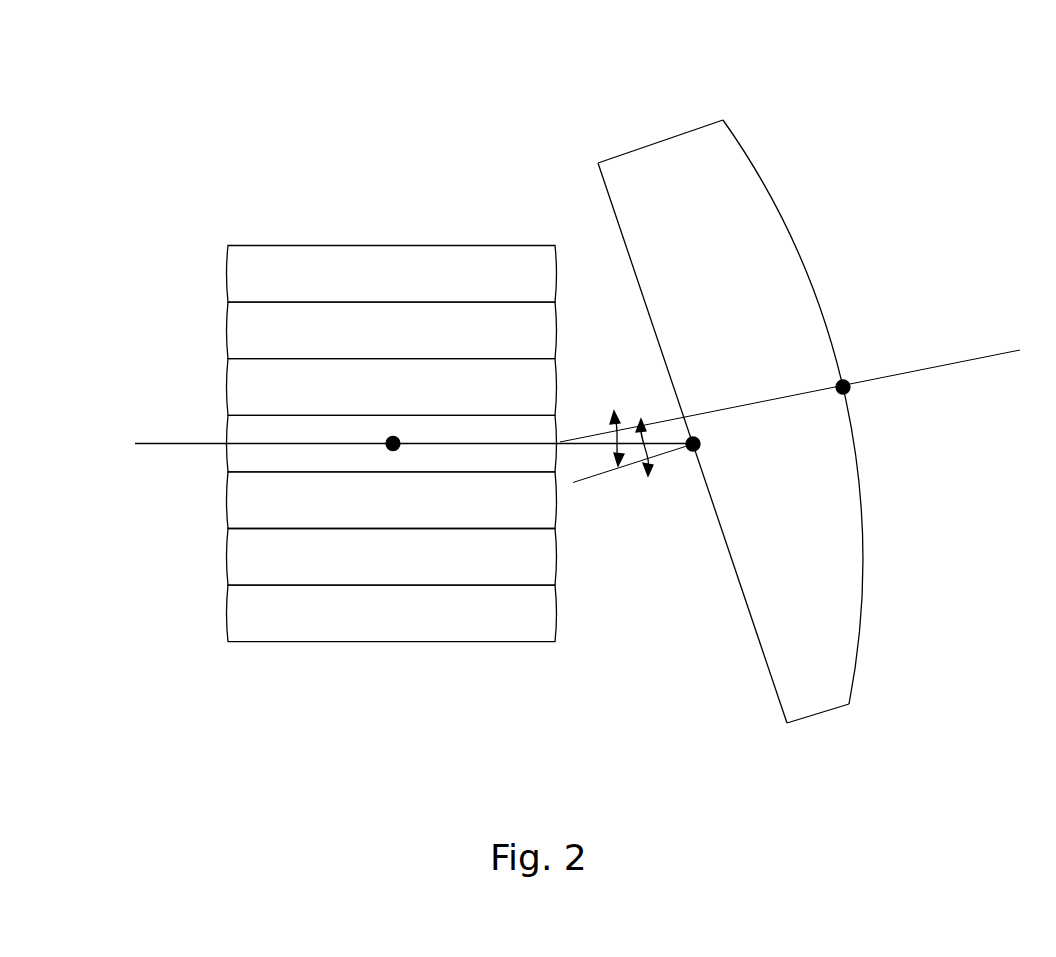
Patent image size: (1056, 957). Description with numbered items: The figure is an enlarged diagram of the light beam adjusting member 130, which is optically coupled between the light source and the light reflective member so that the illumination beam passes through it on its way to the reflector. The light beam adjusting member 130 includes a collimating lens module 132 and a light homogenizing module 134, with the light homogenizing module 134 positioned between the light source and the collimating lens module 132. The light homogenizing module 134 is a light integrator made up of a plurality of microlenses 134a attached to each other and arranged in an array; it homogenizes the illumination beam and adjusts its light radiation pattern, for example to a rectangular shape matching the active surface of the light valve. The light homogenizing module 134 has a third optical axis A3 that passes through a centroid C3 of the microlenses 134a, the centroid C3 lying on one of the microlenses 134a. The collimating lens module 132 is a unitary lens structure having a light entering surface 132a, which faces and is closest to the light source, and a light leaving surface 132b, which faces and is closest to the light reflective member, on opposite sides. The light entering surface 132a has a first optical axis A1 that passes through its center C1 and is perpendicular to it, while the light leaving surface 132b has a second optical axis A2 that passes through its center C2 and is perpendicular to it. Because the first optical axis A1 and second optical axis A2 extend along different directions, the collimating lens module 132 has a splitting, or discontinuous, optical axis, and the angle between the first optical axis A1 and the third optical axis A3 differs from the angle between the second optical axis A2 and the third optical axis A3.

The light beam adjusting member 130 is at (642, 93).
The collimating lens module 132 is at (623, 163).
The light entering surface 132a is at (764, 655).
The light leaving surface 132b is at (863, 588).
The light homogenizing module 134 is at (494, 260).
The microlenses 134a is at (228, 273).
The first optical axis A1 is at (574, 483).
The second optical axis A2 is at (938, 368).
The third optical axis A3 is at (172, 443).
The center of the light entering surface C1 is at (693, 450).
The center of the light leaving surface C2 is at (850, 380).
The centroid of the microlenses C3 is at (393, 451).